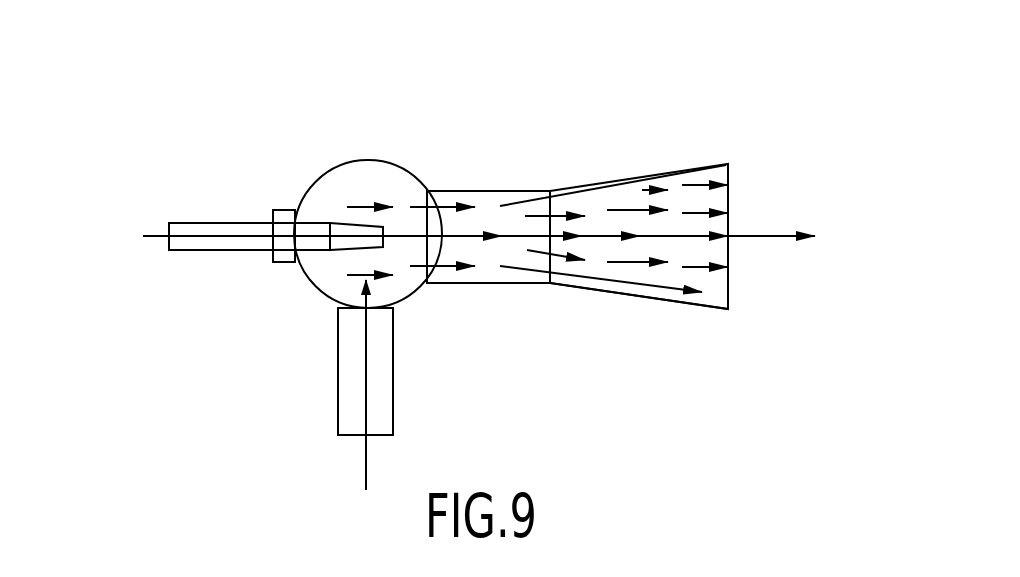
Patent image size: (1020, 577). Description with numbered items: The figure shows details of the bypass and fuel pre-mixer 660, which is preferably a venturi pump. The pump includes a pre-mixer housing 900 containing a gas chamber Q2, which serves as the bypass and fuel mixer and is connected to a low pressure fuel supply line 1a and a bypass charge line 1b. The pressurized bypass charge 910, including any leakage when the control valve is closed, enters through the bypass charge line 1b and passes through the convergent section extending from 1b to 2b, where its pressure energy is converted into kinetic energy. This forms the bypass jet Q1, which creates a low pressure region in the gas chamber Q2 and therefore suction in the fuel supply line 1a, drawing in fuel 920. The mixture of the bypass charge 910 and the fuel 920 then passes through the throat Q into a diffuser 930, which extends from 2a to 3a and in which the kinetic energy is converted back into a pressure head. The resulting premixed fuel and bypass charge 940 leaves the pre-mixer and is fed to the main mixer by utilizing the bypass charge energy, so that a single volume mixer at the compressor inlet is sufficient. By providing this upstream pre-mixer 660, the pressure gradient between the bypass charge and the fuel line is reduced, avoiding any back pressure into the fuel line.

The pre-mixer housing 900 is at (305, 178).
The pressurized bypass charge 910 is at (160, 234).
The bypass charge line 1b is at (208, 250).
The fuel 920 is at (365, 468).
The low pressure fuel supply line 1a is at (330, 367).
The diffuser inlet section 2a is at (527, 190).
The convergent section outlet 2b is at (352, 276).
The diffuser outlet section 3a is at (667, 163).
The diffuser 930 is at (698, 310).
The premixed fuel and bypass charge 940 is at (753, 236).
The bypass and fuel pre-mixer 660 is at (632, 110).
The bypass jet Q1 is at (383, 228).
The gas chamber Q2 is at (405, 293).
The throat Q is at (482, 190).